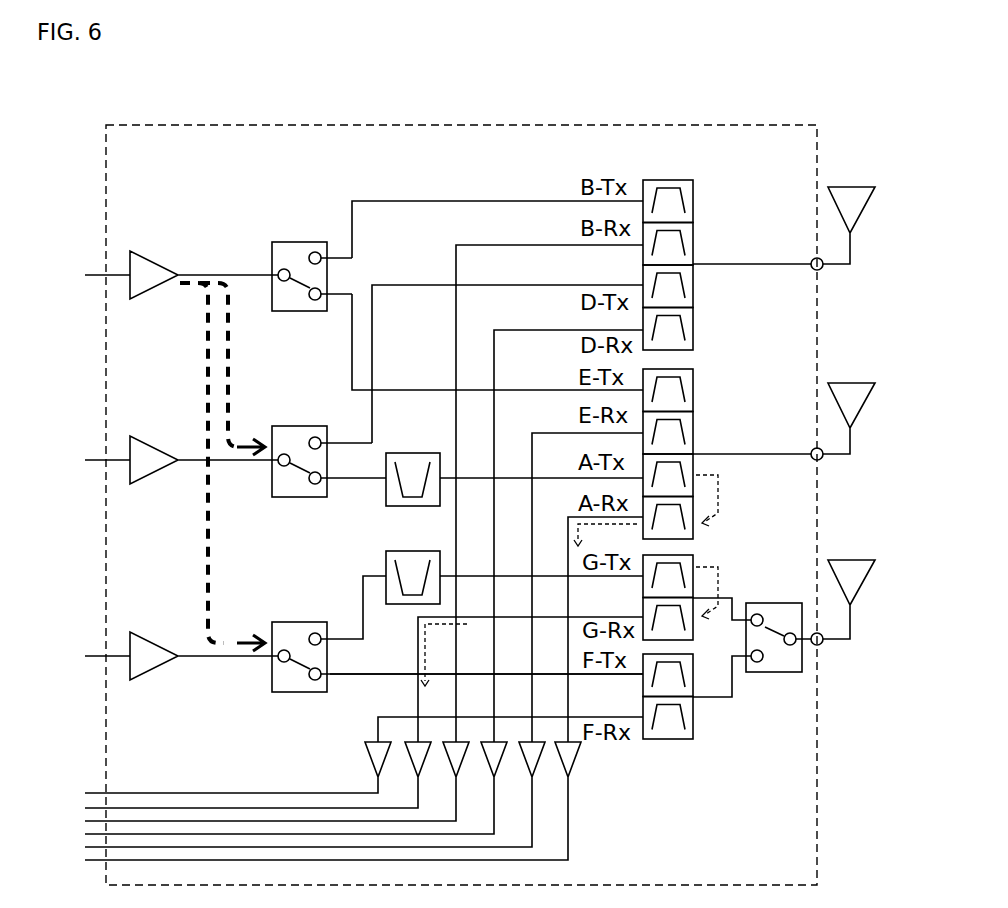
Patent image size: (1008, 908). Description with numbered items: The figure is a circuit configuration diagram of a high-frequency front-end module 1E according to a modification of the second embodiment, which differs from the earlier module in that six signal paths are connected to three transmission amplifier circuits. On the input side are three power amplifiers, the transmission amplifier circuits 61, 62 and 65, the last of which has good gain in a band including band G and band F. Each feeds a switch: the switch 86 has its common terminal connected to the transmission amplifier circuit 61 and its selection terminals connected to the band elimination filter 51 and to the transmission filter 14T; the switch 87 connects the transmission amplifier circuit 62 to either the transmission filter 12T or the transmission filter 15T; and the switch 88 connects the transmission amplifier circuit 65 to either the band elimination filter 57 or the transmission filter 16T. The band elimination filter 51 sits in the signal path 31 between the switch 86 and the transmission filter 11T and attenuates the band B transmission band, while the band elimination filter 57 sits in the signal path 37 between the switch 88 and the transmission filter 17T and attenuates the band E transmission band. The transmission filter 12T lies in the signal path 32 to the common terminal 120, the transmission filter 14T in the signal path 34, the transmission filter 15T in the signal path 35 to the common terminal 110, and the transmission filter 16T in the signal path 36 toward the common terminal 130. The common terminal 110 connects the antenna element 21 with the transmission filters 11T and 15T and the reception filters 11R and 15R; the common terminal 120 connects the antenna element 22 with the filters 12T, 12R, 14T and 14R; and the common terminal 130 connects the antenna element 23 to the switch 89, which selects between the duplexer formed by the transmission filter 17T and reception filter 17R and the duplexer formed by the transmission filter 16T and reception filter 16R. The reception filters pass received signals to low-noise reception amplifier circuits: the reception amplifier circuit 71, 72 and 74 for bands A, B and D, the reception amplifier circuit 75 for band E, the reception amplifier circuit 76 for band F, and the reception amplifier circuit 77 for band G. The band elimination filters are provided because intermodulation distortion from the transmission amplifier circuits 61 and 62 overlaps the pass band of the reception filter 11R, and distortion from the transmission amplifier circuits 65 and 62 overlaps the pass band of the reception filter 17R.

The high-frequency front-end module 1E is at (818, 142).
The transmission amplifier circuit 62 is at (145, 258).
The transmission amplifier circuit 61 is at (145, 443).
The transmission amplifier circuit 65 is at (145, 639).
The switch 87 is at (288, 242).
The switch 86 is at (288, 426).
The switch 88 is at (288, 622).
The switch 89 is at (782, 603).
The band elimination filter 51 is at (403, 452).
The band elimination filter 57 is at (403, 550).
The signal path 32 is at (478, 200).
The signal path 34 is at (478, 284).
The signal path 35 is at (505, 390).
The signal path 31 is at (508, 477).
The signal path 37 is at (508, 575).
The signal path 36 is at (508, 672).
The transmission filter 12T is at (693, 189).
The reception filter 12R is at (693, 242).
The transmission filter 14T is at (693, 283).
The reception filter 14R is at (693, 325).
The transmission filter 15T is at (693, 387).
The reception filter 15R is at (693, 430).
The transmission filter 11T is at (693, 462).
The reception filter 11R is at (693, 530).
The transmission filter 17T is at (693, 561).
The reception filter 17R is at (695, 629).
The transmission filter 16T is at (693, 675).
The reception filter 16R is at (693, 717).
The common terminal 120 is at (820, 271).
The common terminal 110 is at (820, 461).
The common terminal 130 is at (820, 646).
The antenna element 22 is at (845, 182).
The antenna element 21 is at (845, 378).
The antenna element 23 is at (845, 555).
The reception amplifier circuit 76 is at (384, 758).
The reception amplifier circuit 77 is at (424, 758).
The reception amplifier circuit 72 is at (462, 758).
The reception amplifier circuit 74 is at (500, 758).
The reception amplifier circuit 75 is at (538, 758).
The reception amplifier circuit 71 is at (574, 758).